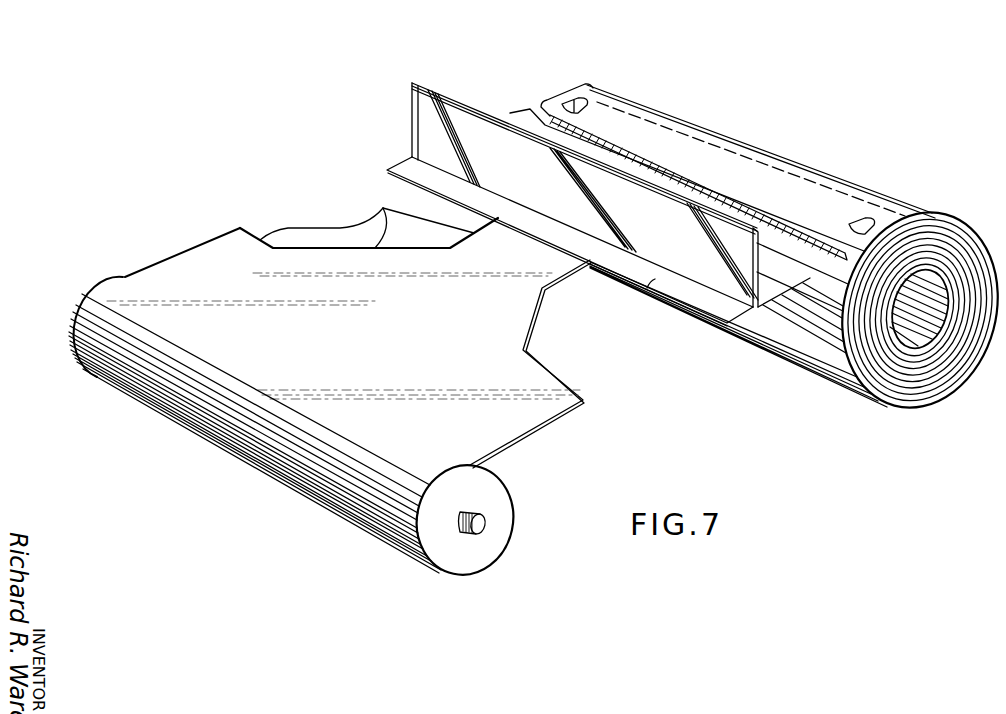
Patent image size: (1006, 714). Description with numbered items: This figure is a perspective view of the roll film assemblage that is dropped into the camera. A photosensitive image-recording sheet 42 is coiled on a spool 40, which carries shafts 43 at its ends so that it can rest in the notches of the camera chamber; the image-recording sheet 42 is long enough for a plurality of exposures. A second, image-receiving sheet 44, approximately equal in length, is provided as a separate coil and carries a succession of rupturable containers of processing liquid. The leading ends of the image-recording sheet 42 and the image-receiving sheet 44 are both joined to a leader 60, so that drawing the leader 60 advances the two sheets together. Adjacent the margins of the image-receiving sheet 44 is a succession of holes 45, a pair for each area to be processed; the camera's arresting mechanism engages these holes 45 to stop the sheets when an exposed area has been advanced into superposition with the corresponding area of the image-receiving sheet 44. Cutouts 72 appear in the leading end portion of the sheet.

The spool 40 is at (492, 521).
The photosensitive image-recording sheet 42 is at (490, 427).
The shafts 43 is at (482, 530).
The second sheet 44 is at (820, 347).
The holes 45 is at (570, 103).
The leader 60 is at (768, 247).
The tab 72 is at (383, 208).